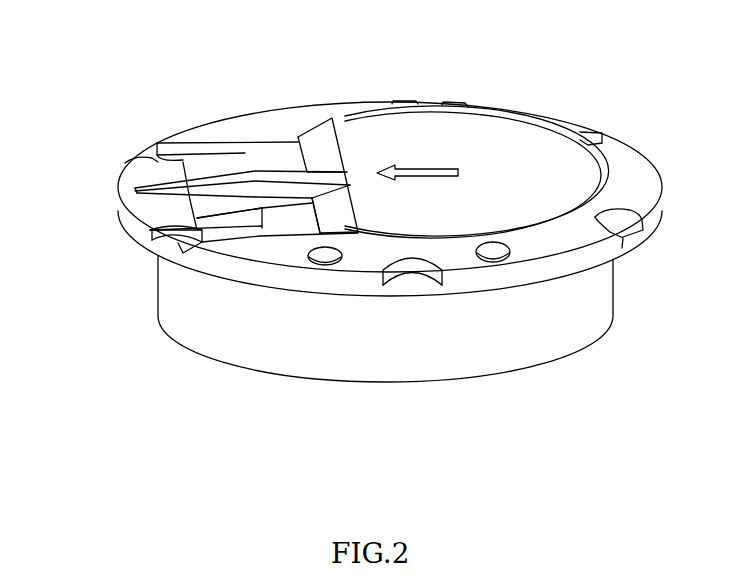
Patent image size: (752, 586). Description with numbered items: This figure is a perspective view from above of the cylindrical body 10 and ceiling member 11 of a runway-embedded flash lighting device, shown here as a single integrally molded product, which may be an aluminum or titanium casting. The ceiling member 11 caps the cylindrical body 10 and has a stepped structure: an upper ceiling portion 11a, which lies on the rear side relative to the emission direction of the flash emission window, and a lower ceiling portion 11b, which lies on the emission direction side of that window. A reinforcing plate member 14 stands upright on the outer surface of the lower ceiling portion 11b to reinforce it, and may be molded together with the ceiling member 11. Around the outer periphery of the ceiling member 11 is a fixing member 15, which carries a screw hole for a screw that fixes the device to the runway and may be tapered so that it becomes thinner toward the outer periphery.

The cylindrical body 10 is at (603, 287).
The ceiling member 11 is at (637, 175).
The upper ceiling portion 11a is at (533, 125).
The lower ceiling portion 11b is at (257, 200).
The reinforcing plate member 14 is at (255, 203).
The fixing member 15 is at (627, 220).